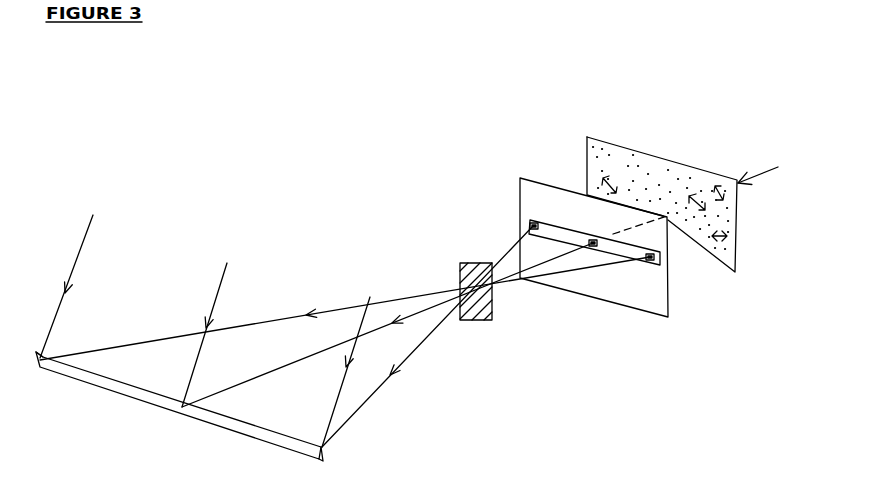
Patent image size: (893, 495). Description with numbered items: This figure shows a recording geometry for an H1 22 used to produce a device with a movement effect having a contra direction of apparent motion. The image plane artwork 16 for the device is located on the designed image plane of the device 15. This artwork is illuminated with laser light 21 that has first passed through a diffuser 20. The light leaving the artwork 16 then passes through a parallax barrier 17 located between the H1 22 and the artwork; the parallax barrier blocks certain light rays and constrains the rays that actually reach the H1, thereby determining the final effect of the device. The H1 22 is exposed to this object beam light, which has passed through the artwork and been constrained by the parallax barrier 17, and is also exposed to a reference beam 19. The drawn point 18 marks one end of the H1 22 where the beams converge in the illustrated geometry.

The detector panel 15 is at (611, 249).
The detector 16 is at (648, 264).
The sample 17 is at (478, 321).
The mirror end 18 is at (330, 463).
The light beam 19 is at (209, 331).
The polarizing screen 20 is at (638, 153).
The incident light 21 is at (755, 178).
The mirror 22 is at (138, 398).